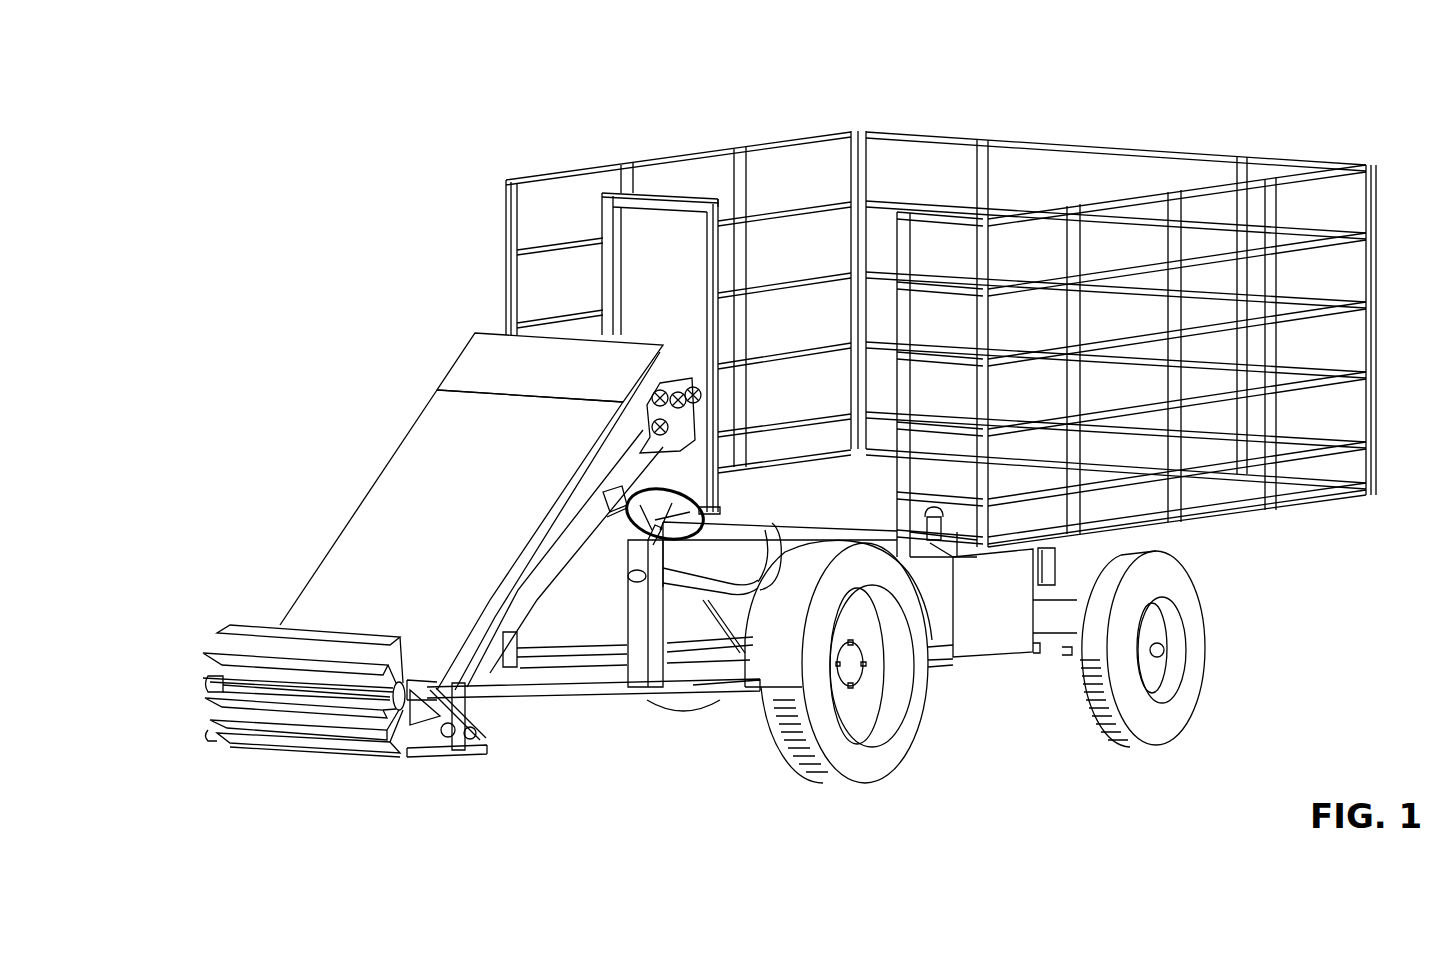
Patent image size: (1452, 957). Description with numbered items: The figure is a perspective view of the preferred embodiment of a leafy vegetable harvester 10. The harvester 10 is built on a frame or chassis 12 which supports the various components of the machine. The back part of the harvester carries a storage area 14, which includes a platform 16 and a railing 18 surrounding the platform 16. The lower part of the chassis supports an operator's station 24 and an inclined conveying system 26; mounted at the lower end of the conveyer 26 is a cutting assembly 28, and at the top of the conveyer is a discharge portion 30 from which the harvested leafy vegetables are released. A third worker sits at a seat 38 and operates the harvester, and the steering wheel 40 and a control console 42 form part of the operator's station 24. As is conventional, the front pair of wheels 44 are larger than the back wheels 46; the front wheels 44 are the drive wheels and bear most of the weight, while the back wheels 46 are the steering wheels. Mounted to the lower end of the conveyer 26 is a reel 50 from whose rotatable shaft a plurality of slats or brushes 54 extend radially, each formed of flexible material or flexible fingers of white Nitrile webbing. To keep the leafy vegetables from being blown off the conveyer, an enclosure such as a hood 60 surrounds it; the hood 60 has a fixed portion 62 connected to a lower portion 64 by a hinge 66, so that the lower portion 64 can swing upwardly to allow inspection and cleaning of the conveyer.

The leafy vegetable harvester 10 is at (391, 290).
The frame or chassis 12 is at (1235, 512).
The storage area 14 is at (1392, 350).
The platform 16 is at (847, 484).
The railing 18 is at (1377, 197).
The operator's station 24 is at (755, 518).
The inclined conveying system 26 is at (310, 542).
The cutting assembly 28 is at (458, 753).
The discharge portion 30 is at (638, 345).
The seat 38 is at (790, 520).
The steering wheel 40 is at (677, 494).
The control console 42 is at (633, 543).
The front pair of wheels 44 is at (900, 753).
The back wheels 46 is at (1200, 698).
The reel 50 is at (190, 633).
The slats or brushes 54 is at (213, 722).
The hood 60 is at (405, 417).
The fixed portion 62 is at (457, 360).
The lower portion 64 is at (373, 485).
The hinge 66 is at (440, 388).